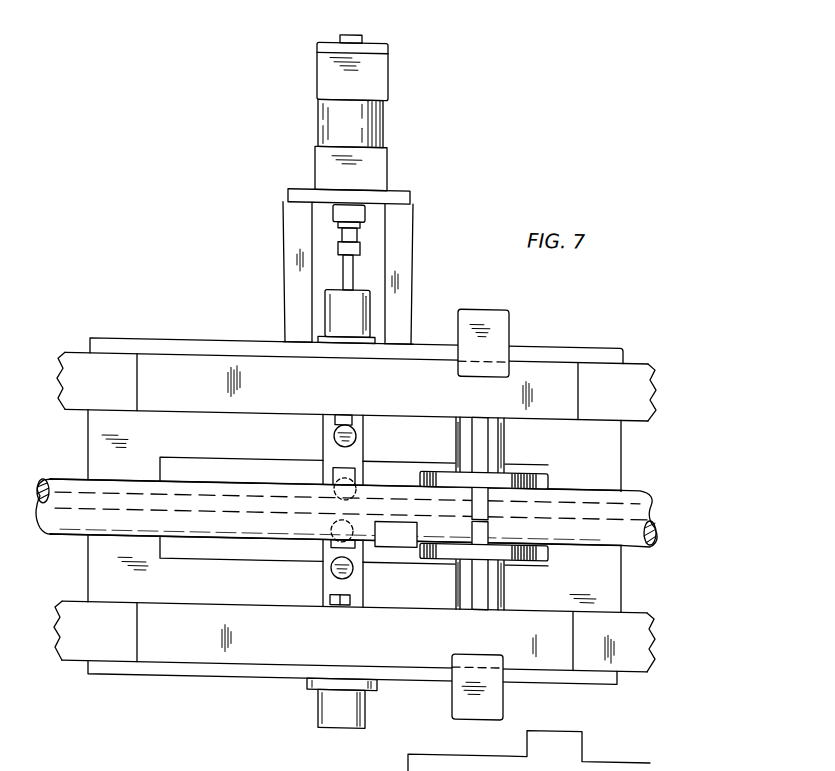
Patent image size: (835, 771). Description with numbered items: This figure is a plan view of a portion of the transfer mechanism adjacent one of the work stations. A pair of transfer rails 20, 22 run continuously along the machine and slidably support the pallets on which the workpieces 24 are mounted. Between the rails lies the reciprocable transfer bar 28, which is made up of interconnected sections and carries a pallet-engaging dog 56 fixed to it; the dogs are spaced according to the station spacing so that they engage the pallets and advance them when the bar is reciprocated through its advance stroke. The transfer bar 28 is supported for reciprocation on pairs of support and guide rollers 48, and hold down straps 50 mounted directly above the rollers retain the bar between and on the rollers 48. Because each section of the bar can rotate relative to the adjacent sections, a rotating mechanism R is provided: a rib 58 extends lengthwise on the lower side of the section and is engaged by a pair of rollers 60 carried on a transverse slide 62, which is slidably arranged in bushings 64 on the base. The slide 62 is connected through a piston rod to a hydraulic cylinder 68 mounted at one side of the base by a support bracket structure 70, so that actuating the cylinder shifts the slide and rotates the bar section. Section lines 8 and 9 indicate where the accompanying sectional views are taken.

The section line 8- 8 is at (352, 31).
The section line 9- 9 is at (452, 323).
The transfer rail 20 is at (640, 367).
The transfer rail 22 is at (650, 762).
The workpiece 24 is at (647, 637).
The transfer bar 28 is at (652, 485).
The support and guide roller 48 is at (546, 476).
The hold down strap 50 is at (482, 437).
The pallet-engaging dog 56 is at (397, 547).
The rib 58 is at (190, 498).
The roller 60 is at (343, 478).
The transverse slide 62 is at (364, 437).
The bushing 64 is at (357, 343).
The hydraulic cylinder 68 is at (377, 118).
The support bracket structure 70 is at (405, 258).
The rotating mechanism R is at (436, 196).